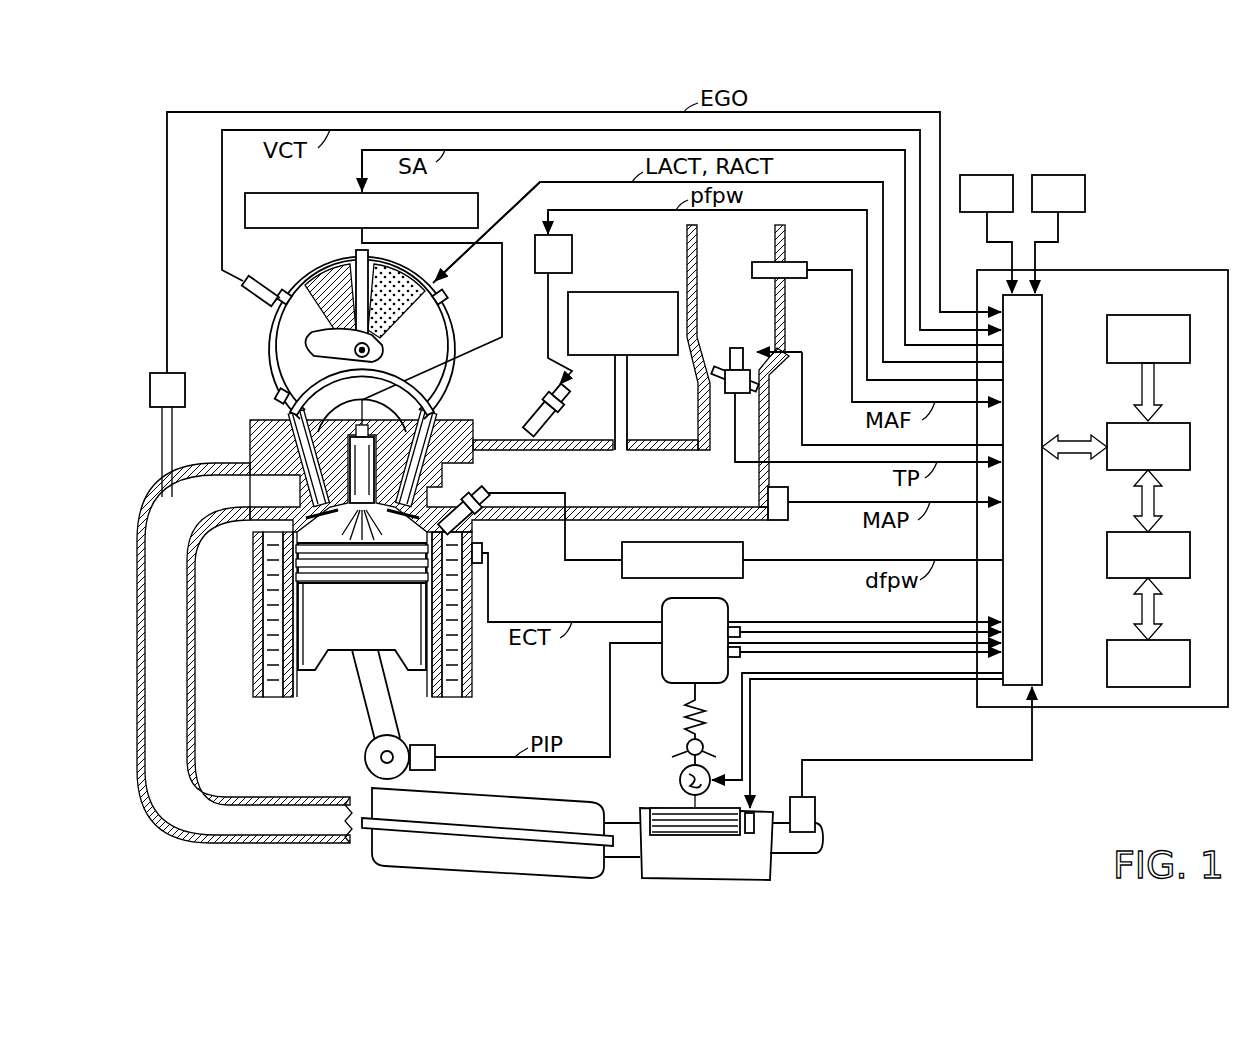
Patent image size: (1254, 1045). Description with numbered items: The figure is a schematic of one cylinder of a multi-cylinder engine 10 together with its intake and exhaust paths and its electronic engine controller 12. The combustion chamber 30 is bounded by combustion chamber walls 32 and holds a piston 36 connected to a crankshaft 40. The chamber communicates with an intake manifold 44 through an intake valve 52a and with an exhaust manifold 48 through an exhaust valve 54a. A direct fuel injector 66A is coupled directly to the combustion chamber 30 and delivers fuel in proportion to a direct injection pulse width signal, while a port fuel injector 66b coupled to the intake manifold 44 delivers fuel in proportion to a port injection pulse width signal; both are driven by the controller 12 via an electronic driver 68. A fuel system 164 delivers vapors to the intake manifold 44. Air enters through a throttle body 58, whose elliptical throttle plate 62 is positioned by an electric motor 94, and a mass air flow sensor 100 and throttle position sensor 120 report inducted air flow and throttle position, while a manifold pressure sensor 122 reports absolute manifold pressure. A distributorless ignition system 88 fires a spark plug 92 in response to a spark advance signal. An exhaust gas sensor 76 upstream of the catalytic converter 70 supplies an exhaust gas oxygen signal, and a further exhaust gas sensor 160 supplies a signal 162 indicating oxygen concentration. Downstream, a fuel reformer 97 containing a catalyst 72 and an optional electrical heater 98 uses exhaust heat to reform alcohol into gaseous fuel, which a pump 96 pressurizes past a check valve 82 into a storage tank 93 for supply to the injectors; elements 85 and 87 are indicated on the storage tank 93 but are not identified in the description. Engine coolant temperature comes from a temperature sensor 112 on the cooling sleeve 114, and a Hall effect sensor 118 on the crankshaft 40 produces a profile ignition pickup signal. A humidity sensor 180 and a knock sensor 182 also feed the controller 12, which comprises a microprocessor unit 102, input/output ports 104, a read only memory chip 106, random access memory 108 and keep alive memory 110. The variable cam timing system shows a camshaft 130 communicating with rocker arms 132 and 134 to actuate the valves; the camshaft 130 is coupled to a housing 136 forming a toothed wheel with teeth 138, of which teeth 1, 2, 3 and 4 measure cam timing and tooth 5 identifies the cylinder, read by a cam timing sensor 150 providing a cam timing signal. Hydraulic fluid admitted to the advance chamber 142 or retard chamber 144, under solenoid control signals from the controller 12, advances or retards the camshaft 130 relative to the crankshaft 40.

The tooth 1 is at (356, 258).
The tooth 2 is at (447, 302).
The tooth 3 is at (392, 440).
The tooth 4 is at (278, 396).
The tooth 5 is at (278, 302).
The engine 10 is at (510, 350).
The electronic engine controller 12 is at (1180, 268).
The combustion chamber 30 is at (320, 560).
The combustion chamber walls 32 is at (300, 697).
The piston 36 is at (364, 652).
The crankshaft 40 is at (366, 758).
The intake manifold 44 is at (631, 366).
The exhaust manifold 48 is at (150, 520).
The intake valve 52a is at (430, 500).
The exhaust valve 54a is at (310, 502).
The throttle body 58 is at (718, 432).
The throttle plate 62 is at (725, 366).
The fuel injector 66A is at (480, 515).
The fuel injector 66b is at (553, 400).
The electronic driver 68 is at (743, 556).
The catalytic converter 70 is at (446, 797).
The catalyst 72 is at (678, 808).
The exhaust gas sensor 76 is at (155, 373).
The check valve 82 is at (686, 748).
The pedal position sensor 85 is at (728, 603).
The sensor connector 87 is at (740, 655).
The distributorless ignition system 88 is at (478, 222).
The spark plug 92 is at (348, 440).
The storage tank 93 is at (662, 680).
The electric motor 94 is at (740, 346).
The pump 96 is at (680, 776).
The fuel reformer 97 is at (770, 880).
The electrical heater 98 is at (755, 810).
The mass air flow sensor 100 is at (797, 262).
The microprocessor unit 102 is at (1160, 423).
The input/output ports 104 is at (1042, 345).
The read only memory chip 106 is at (1133, 315).
The random access memory 108 is at (1160, 532).
The keep alive memory 110 is at (1160, 640).
The temperature sensor 112 is at (488, 560).
The cooling sleeve 114 is at (462, 672).
The Hall effect sensor 118 is at (422, 745).
The throttle position sensor 120 is at (712, 375).
The manifold pressure sensor 122 is at (788, 494).
The camshaft 130 is at (361, 334).
The rocker arm 132 is at (288, 412).
The rocker arm 134 is at (435, 412).
The housing 136 is at (270, 370).
The teeth 138 is at (440, 300).
The advance chamber 142 is at (388, 285).
The retard chamber 144 is at (328, 285).
The cam timing sensor 150 is at (246, 296).
The exhaust gas sensor 160 is at (815, 805).
The signal 162 is at (970, 760).
The fuel system 164 is at (626, 292).
The humidity sensor 180 is at (986, 234).
The knock sensor 182 is at (1058, 234).